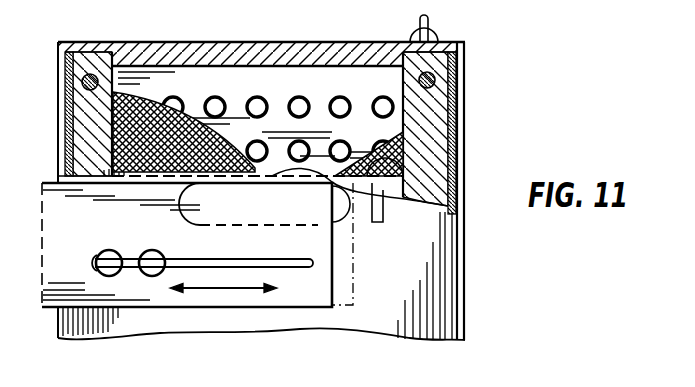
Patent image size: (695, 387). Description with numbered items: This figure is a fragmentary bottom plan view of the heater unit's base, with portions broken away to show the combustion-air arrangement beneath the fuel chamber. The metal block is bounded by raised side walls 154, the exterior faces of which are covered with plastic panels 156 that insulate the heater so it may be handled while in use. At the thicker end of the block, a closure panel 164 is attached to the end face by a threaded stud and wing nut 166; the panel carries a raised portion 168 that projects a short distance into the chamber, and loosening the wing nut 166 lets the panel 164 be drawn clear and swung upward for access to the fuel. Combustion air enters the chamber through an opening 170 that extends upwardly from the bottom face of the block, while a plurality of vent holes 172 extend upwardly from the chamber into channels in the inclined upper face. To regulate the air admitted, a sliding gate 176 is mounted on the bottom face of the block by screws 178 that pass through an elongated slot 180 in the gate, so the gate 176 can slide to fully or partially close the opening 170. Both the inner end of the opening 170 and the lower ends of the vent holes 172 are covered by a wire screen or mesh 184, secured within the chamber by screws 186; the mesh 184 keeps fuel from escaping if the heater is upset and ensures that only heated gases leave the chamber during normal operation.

The raised side walls 154 is at (458, 115).
The plastic panels 156 is at (460, 170).
The closure panel 164 is at (97, 53).
The threaded stud and wing nut 166 is at (438, 36).
The raised portion 168 is at (175, 64).
The opening 170 is at (313, 228).
The vent holes 172 is at (300, 142).
The sliding gate 176 is at (324, 273).
The screws 178 is at (152, 250).
The elongated slot 180 is at (286, 279).
The wire screen or mesh 184 is at (158, 102).
The screws 186 is at (384, 203).